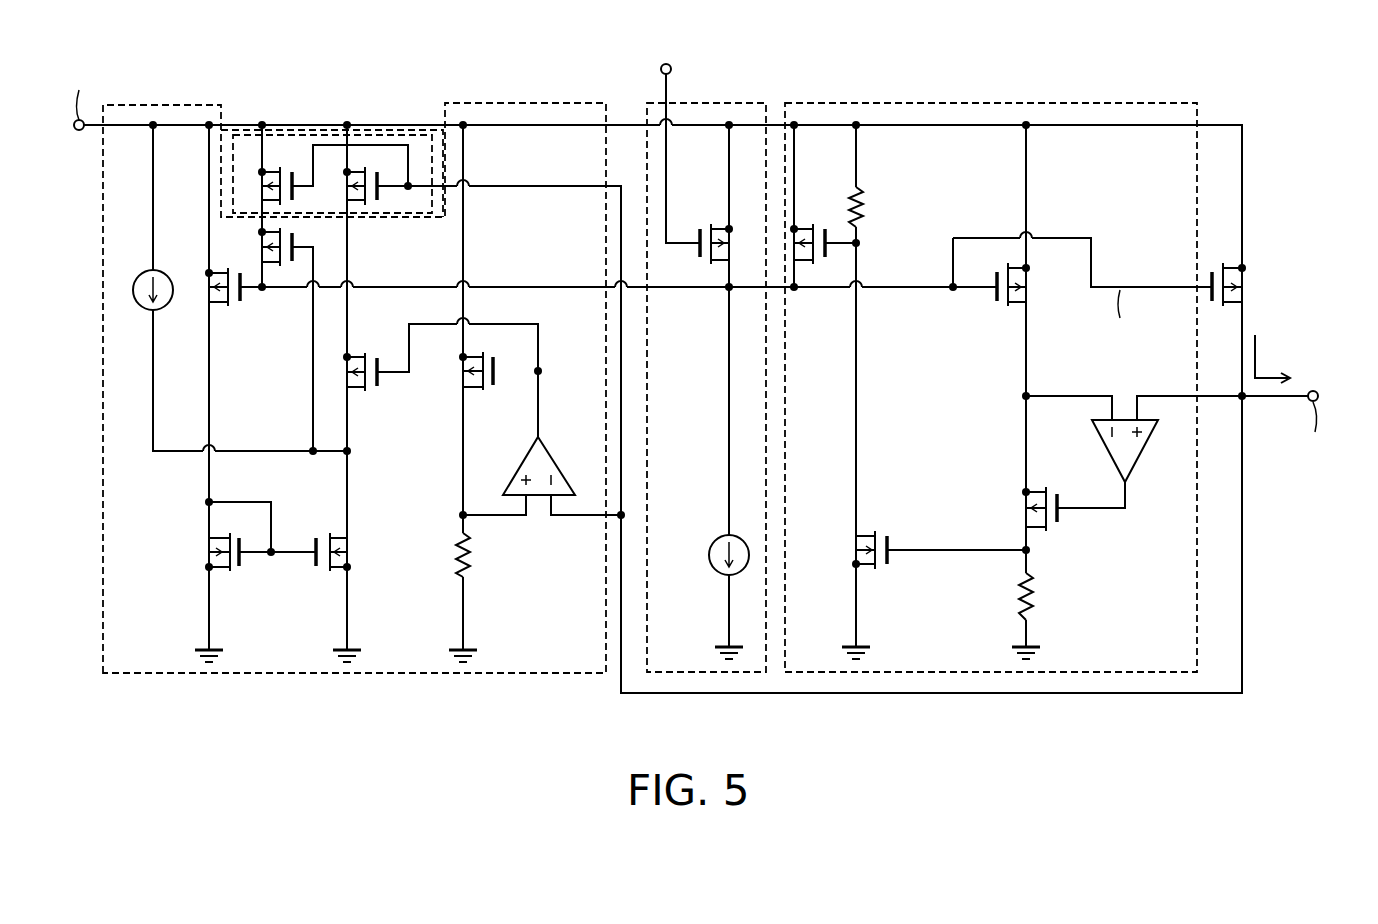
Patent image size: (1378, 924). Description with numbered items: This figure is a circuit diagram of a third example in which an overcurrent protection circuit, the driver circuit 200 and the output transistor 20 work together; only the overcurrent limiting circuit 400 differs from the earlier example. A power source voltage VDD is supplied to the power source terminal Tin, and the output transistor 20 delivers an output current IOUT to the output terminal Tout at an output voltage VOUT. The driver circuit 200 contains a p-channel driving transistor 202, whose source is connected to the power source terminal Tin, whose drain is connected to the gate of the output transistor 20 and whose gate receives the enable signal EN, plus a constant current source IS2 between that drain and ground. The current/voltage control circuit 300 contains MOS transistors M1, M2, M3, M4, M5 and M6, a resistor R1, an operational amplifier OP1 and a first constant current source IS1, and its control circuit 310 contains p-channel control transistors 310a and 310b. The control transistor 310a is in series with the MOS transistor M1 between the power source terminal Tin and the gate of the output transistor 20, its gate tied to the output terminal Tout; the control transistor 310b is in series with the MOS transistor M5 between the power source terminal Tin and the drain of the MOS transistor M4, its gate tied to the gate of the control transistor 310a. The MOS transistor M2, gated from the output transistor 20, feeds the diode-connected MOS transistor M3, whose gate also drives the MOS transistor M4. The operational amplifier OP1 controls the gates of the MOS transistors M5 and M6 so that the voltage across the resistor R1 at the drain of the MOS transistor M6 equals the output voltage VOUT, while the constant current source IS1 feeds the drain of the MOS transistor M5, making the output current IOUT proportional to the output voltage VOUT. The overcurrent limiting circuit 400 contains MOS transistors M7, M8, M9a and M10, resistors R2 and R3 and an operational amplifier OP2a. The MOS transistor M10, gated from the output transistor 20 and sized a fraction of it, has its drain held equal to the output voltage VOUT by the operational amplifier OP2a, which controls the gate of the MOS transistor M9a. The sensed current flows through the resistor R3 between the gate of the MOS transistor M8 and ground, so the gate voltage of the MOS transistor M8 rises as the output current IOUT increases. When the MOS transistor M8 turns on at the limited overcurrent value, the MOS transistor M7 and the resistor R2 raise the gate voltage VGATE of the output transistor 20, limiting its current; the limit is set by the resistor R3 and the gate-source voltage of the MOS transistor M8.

The output transistor 20 is at (1248, 293).
The driver circuit 200 is at (715, 103).
The driving transistor 202 is at (711, 228).
The current/voltage control circuit 300 is at (532, 103).
The control circuit 310 is at (390, 130).
The control transistor 310a is at (295, 190).
The control transistor 310b is at (385, 203).
The overcurrent limiting circuit 400 is at (987, 103).
The MOS transistor M1 is at (283, 265).
The MOS transistor M2 is at (232, 306).
The MOS transistor M3 is at (232, 570).
The MOS transistor M4 is at (326, 570).
The MOS transistor M5 is at (370, 391).
The MOS transistor M6 is at (485, 391).
The MOS transistor M7 is at (820, 228).
The MOS transistor M8 is at (872, 548).
The MOS transistor M9a is at (1030, 516).
The MOS transistor M10 is at (1004, 306).
The resistor R1 is at (474, 561).
The resistor R2 is at (867, 210).
The resistor R3 is at (1034, 599).
The first constant current source IS1 is at (145, 270).
The constant current source IS2 is at (717, 537).
The operational amplifier OP1 is at (553, 454).
The operational amplifier OP2a is at (1103, 432).
The power source terminal Tin is at (74, 92).
The output terminal Tout is at (1309, 431).
The power source voltage VDD is at (54, 126).
The enable signal EN is at (650, 70).
The gate voltage VGATE is at (1117, 314).
The output current IOUT is at (1283, 356).
The output voltage VOUT is at (1343, 397).